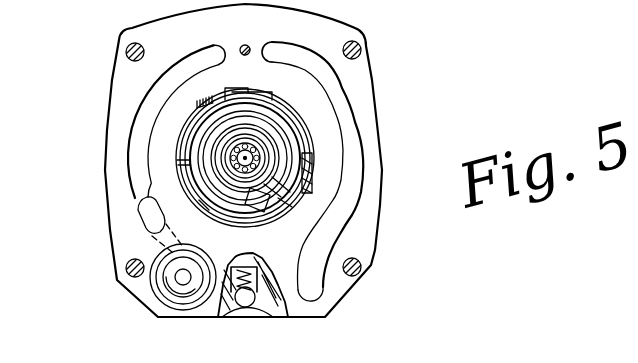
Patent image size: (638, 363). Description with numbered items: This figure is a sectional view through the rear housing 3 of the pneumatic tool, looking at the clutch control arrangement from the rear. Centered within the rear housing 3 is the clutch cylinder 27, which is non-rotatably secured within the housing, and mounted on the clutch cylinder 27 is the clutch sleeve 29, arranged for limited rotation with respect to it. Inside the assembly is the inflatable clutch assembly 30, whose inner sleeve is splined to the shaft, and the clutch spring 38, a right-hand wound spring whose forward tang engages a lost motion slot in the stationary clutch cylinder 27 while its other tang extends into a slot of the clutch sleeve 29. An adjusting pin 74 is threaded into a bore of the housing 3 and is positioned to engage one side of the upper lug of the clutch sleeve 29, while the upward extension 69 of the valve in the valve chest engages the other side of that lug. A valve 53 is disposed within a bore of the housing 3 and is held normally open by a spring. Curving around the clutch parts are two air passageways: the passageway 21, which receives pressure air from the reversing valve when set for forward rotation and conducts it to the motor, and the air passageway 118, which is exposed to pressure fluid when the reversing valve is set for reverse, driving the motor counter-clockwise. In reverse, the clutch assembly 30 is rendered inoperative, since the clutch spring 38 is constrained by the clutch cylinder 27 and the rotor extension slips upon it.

The rear housing 3 is at (377, 70).
The passageway 21 is at (127, 125).
The clutch cylinder 27 is at (267, 120).
The clutch sleeve 29 is at (282, 206).
The inflatable clutch assembly 30 is at (264, 148).
The clutch spring 38 is at (231, 205).
The valve 53 is at (160, 305).
The extension 69 is at (303, 180).
The adjusting pin 74 is at (229, 93).
The air passageway 118 is at (352, 208).